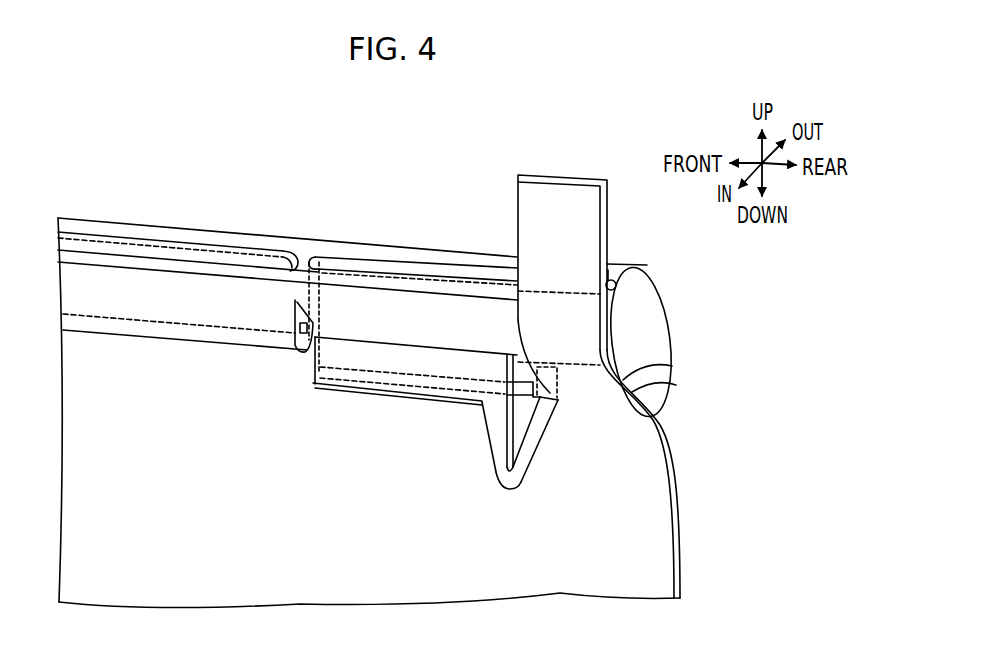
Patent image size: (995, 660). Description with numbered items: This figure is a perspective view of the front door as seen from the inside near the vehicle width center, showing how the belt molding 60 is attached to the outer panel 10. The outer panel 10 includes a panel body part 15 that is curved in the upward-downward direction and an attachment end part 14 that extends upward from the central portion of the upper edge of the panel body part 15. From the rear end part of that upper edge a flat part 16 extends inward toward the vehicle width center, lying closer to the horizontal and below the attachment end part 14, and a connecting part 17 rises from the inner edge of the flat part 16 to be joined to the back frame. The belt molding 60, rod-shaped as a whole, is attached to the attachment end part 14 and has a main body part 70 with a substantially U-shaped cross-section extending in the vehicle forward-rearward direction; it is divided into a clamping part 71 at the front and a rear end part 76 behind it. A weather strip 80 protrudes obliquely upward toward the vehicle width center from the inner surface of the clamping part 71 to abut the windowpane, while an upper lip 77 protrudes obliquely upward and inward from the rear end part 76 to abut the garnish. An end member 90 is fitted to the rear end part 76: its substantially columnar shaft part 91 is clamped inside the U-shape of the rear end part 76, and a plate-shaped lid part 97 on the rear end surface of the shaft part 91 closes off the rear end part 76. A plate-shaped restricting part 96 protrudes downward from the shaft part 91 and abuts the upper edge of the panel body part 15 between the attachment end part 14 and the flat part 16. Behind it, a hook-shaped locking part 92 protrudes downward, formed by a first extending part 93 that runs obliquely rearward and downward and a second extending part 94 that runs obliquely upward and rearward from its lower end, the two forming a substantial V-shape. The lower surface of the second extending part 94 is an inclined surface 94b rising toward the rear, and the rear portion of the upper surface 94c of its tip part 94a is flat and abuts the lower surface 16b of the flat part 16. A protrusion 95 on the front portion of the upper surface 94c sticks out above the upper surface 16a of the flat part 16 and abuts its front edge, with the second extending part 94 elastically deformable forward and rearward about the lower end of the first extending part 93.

The outer panel 10 is at (682, 553).
The attachment end part 14 is at (110, 233).
The panel body part 15 is at (674, 450).
The flat part 16 is at (672, 383).
The upper surface of the flat part 16a is at (672, 367).
The lower surface of the flat part 16b is at (598, 384).
The connecting part 17 is at (555, 175).
The belt molding 60 is at (695, 266).
The main body part 70 is at (458, 263).
The clamping part 71 is at (153, 226).
The rear end part 76 is at (386, 243).
The upper lip 77 is at (340, 256).
The weather strip 80 is at (237, 246).
The end member 90 is at (652, 267).
The shaft part 91 is at (552, 289).
The locking part 92 is at (490, 463).
The first extending part 93 is at (483, 434).
The second extending part 94 is at (528, 474).
The tip part 94a is at (550, 418).
The inclined surface 94b is at (546, 446).
The upper surface 94c is at (552, 398).
The protrusion 95 is at (538, 364).
The restricting part 96 is at (350, 395).
The lid part 97 is at (668, 312).